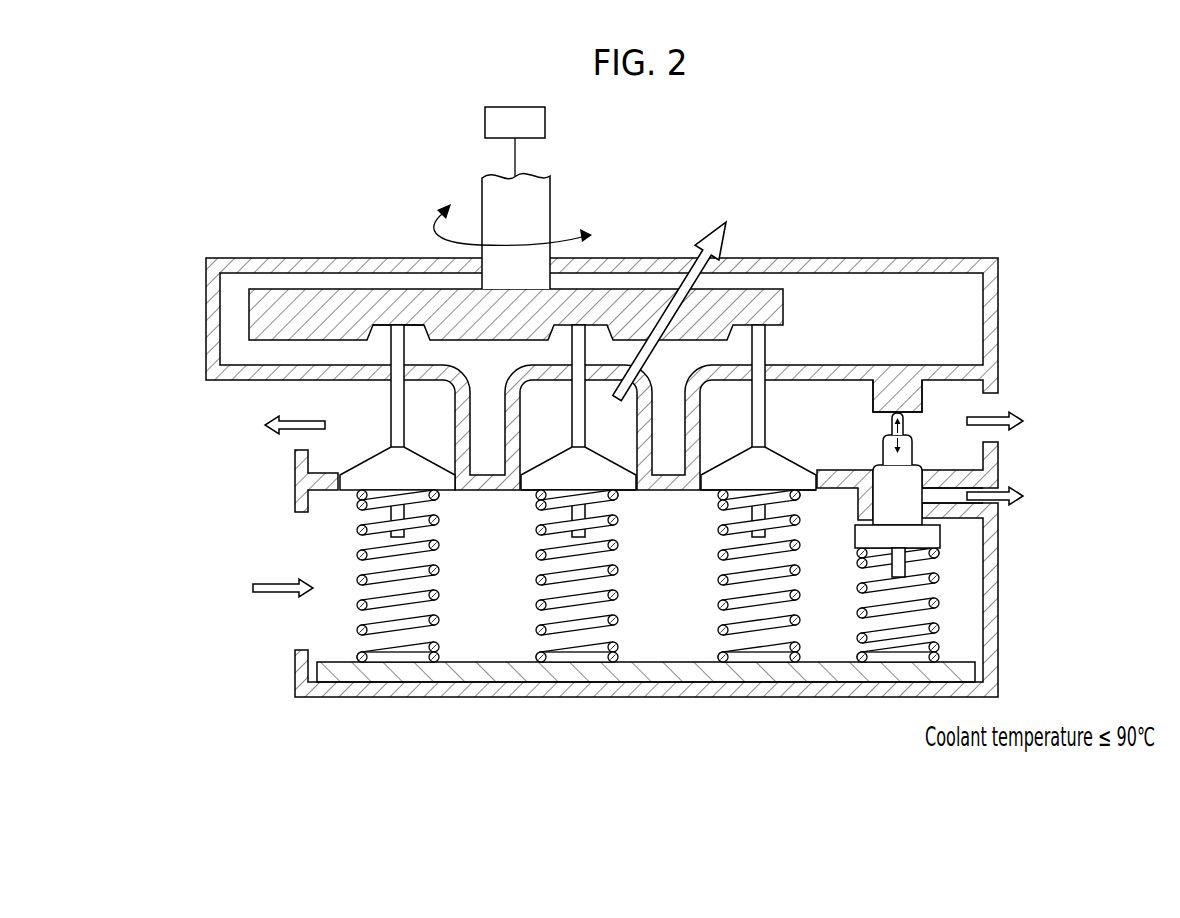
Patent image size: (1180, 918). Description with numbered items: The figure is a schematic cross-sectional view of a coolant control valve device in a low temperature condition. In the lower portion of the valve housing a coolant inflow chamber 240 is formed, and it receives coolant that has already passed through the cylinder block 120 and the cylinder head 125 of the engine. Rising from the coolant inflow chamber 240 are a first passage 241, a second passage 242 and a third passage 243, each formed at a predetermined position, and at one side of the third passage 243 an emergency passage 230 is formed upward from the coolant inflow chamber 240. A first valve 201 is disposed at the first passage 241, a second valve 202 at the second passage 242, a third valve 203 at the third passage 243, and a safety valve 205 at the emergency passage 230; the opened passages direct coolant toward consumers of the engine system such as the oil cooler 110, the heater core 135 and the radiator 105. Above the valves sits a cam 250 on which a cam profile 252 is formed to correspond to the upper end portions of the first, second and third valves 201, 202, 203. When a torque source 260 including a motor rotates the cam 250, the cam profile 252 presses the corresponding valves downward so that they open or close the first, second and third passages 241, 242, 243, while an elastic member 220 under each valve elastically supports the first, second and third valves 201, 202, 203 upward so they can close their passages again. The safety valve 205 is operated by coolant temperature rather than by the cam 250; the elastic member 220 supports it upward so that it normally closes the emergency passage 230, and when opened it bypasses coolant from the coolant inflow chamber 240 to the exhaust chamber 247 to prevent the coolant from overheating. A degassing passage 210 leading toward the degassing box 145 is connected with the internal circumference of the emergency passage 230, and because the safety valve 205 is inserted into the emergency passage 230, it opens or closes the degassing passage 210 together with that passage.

The radiator 105 is at (1013, 418).
The oil cooler 110 is at (278, 423).
The cylinder block 120 is at (244, 588).
The cylinder head 125 is at (244, 588).
The heater core 135 is at (683, 298).
The degassing box 145 is at (1013, 495).
The first valve 201 is at (372, 470).
The second valve 202 is at (603, 467).
The third valve 203 is at (795, 470).
The safety valve 205 is at (873, 465).
The degassing passage 210 is at (952, 496).
The elastic member 220 is at (363, 665).
The emergency passage 230 is at (881, 471).
The coolant inflow chamber 240 is at (472, 626).
The first passage 241 is at (338, 483).
The second passage 242 is at (530, 493).
The third passage 243 is at (733, 493).
The exhaust chamber 247 is at (945, 406).
The cam 250 is at (270, 298).
The cam profile 252 is at (411, 327).
The torque source 260 is at (547, 122).